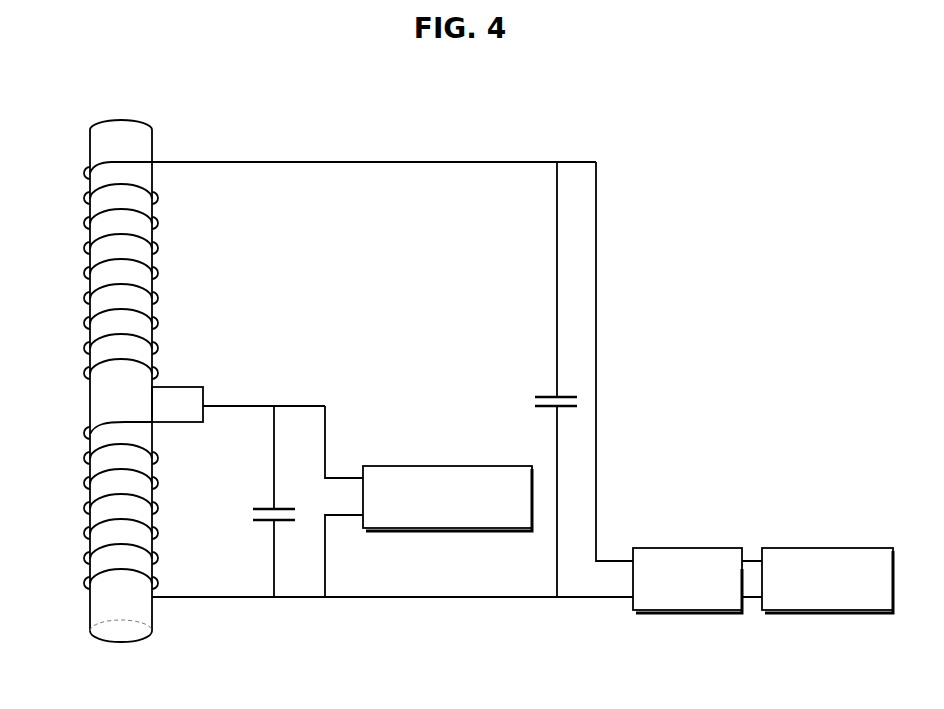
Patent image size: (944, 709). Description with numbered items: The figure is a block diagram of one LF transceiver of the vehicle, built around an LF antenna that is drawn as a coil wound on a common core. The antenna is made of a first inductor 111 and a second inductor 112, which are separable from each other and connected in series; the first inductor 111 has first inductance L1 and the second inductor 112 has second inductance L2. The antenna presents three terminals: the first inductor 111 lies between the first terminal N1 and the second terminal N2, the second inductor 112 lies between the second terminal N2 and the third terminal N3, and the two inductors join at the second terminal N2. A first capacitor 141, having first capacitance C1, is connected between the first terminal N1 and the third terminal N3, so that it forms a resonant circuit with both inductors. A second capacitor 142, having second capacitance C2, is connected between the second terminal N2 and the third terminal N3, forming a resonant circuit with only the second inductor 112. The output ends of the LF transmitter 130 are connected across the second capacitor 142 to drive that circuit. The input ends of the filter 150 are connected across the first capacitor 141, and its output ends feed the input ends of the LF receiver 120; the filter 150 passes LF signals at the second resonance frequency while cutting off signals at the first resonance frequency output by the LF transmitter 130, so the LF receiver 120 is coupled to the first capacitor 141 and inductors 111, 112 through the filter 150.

The first inductor 111 is at (89, 273).
The second inductor 112 is at (89, 505).
The LF receiver 120 is at (874, 548).
The LF transmitter 130 is at (507, 466).
The first capacitor 141 is at (532, 379).
The second capacitor 142 is at (251, 501).
The filter 150 is at (719, 548).
The first inductance L1 is at (53, 188).
The second inductance L2 is at (88, 559).
The first capacitance C1 is at (515, 367).
The second capacitance C2 is at (238, 549).
The first terminal N1 is at (343, 148).
The second terminal N2 is at (183, 387).
The third terminal N3 is at (392, 615).